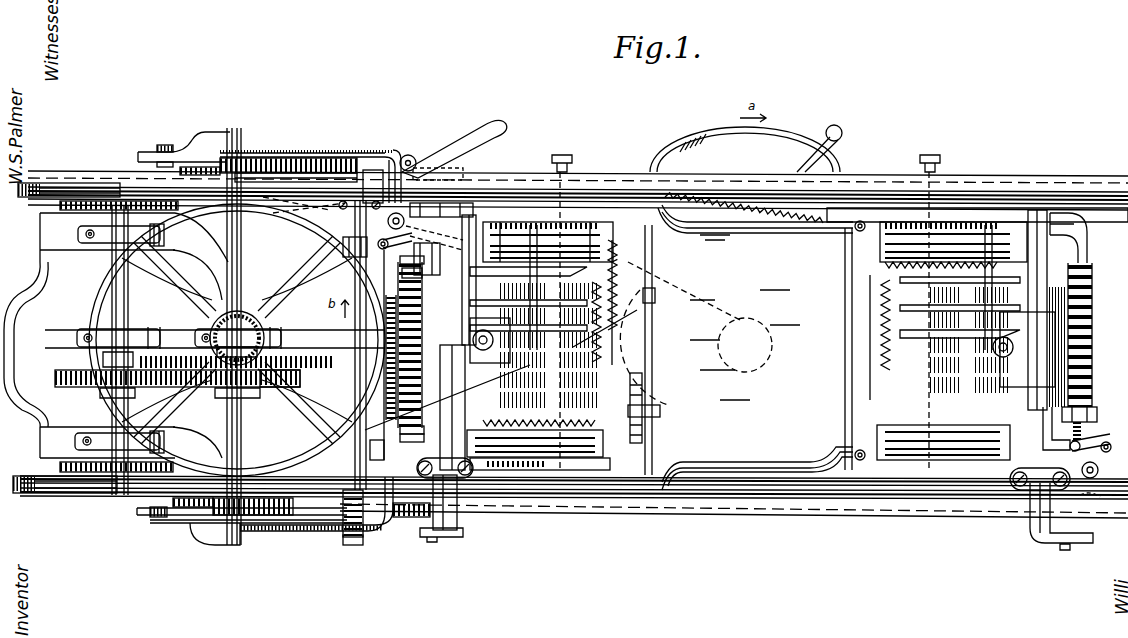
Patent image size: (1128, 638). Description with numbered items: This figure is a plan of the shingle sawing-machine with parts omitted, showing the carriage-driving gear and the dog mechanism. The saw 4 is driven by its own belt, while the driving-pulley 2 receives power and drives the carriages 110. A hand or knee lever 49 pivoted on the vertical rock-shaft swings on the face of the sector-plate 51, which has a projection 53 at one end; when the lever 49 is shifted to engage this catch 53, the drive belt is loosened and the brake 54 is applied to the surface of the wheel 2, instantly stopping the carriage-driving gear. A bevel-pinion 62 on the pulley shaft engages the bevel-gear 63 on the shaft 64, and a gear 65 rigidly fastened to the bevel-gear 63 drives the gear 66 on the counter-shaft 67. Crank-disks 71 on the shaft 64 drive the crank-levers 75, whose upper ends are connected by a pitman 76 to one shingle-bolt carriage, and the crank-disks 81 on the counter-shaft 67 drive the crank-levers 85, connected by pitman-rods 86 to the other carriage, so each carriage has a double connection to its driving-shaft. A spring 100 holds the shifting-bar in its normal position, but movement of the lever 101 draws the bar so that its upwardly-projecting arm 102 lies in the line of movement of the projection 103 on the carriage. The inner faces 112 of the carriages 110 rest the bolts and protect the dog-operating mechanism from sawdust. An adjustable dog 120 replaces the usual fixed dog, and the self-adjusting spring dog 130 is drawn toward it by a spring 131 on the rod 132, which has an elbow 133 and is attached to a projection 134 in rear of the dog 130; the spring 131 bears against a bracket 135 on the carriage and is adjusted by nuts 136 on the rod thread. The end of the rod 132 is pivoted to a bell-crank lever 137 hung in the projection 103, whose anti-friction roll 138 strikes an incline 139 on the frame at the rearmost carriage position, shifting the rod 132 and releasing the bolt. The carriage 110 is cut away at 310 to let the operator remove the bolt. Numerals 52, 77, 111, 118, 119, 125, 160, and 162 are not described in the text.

The driving-pulley 2 is at (237, 340).
The saw 4 is at (738, 348).
The hand or knee lever 49 is at (840, 140).
The sector-plate 51 is at (745, 149).
The hand lever 52 is at (817, 151).
The projection 53 is at (688, 140).
The brake 54 is at (393, 353).
The bevel-pinion 62 is at (222, 322).
The bevel-gear 63 is at (215, 352).
The shaft 64 is at (247, 336).
The gear 65 is at (280, 389).
The gear 66 is at (155, 382).
The counter-shaft 67 is at (129, 350).
The crank-disks 71 is at (185, 172).
The crank-levers 75 is at (242, 339).
The pitman 76 is at (325, 338).
The bracket 77 is at (421, 528).
The crank-disks 81 is at (125, 339).
The crank-levers 85 is at (66, 338).
The pitman-rods 86 is at (790, 446).
The spring 100 is at (363, 527).
The lever 101 is at (453, 149).
The upwardly-projecting arm 102 is at (400, 273).
The projection 103 is at (746, 346).
The carriages 110 is at (750, 340).
The guide rail 111 is at (574, 344).
The inner faces 112 is at (743, 320).
The block 118 is at (636, 270).
The stop 119 is at (380, 445).
The adjustable dog 120 is at (738, 341).
The slide 125 is at (642, 425).
The self-adjusting or spring dog 130 is at (545, 416).
The spring 131 is at (749, 345).
The rod 132 is at (1094, 243).
The elbow 133 is at (740, 466).
The projection 134 is at (548, 455).
The bracket 135 is at (423, 429).
The nuts 136 is at (720, 252).
The bell-crank lever 137 is at (1103, 424).
The anti-friction roll 138 is at (743, 345).
The incline 139 is at (441, 209).
The coil holder 160 is at (762, 312).
The block 162 is at (346, 248).
The cut-away 310 is at (1092, 360).